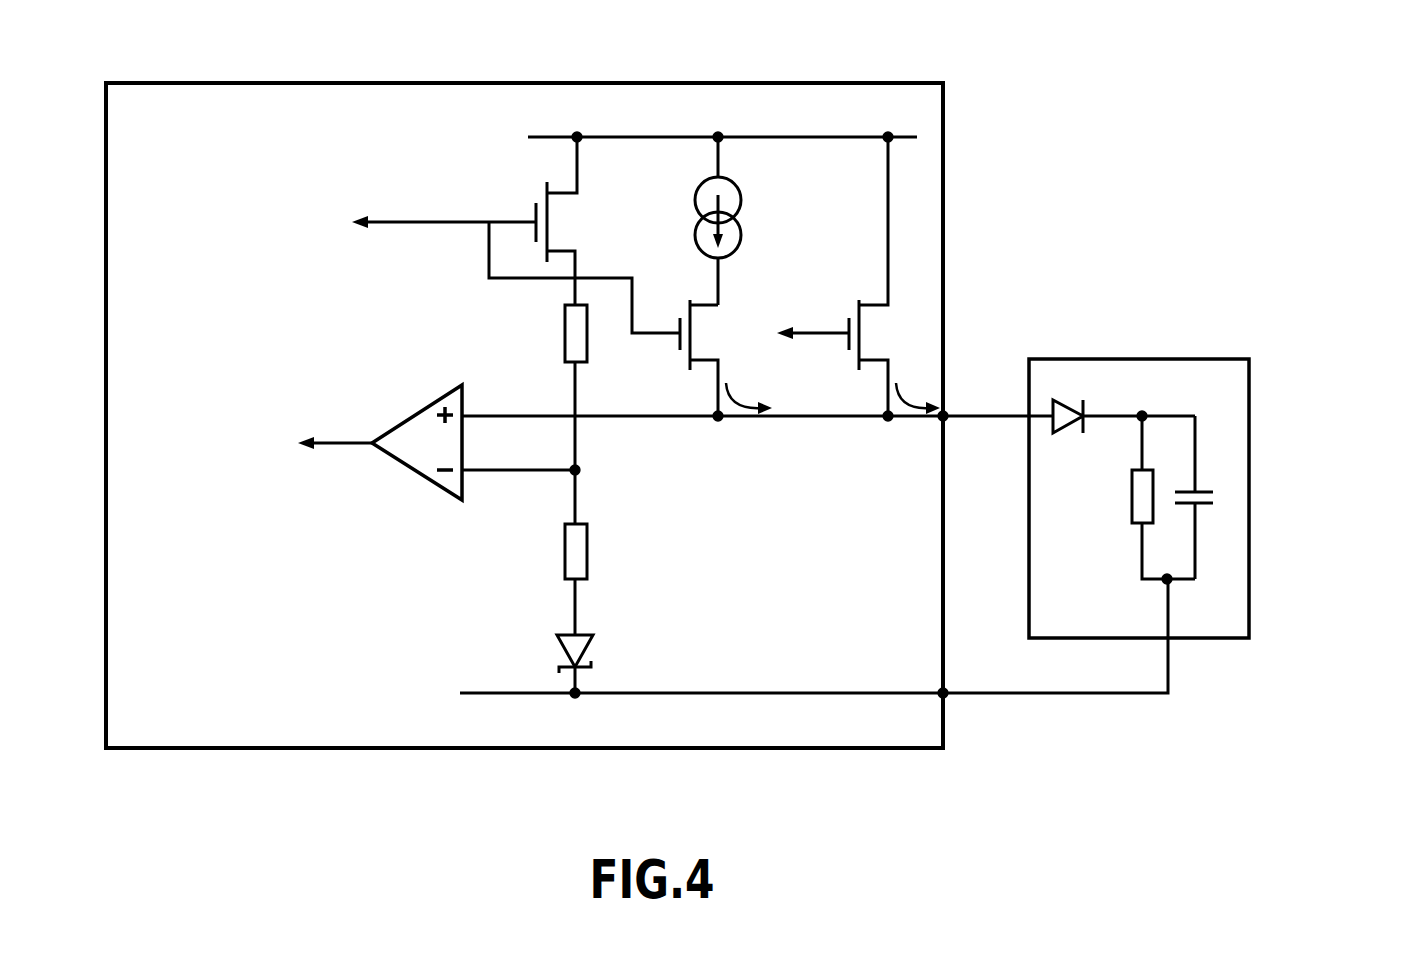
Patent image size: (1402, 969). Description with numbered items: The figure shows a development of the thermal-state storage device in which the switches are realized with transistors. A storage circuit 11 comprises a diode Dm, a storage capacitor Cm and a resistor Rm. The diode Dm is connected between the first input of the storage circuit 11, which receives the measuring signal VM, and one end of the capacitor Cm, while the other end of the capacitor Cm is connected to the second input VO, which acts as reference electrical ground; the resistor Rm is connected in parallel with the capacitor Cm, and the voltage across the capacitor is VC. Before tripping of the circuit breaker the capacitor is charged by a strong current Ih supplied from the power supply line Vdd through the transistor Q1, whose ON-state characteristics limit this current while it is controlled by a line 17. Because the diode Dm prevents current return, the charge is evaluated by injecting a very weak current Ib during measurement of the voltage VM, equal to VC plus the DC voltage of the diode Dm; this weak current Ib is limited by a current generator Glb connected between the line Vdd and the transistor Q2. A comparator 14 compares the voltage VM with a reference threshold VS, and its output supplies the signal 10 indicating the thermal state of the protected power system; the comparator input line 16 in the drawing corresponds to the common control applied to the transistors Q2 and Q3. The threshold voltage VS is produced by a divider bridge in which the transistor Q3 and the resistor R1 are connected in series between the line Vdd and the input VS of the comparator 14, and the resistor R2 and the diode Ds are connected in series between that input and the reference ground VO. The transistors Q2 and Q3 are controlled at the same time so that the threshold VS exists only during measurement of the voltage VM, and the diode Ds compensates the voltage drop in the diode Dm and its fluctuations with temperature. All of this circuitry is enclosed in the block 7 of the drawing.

The drive circuit 7 is at (948, 170).
The first control input 16 is at (405, 221).
The control line 17 is at (812, 333).
The comparator 14 is at (395, 425).
The output signal 10 is at (337, 445).
The storage circuit 11 is at (1199, 414).
The power supply line Vdd is at (782, 137).
The transistor Q3 is at (541, 185).
The transistor Q2 is at (688, 368).
The transistor Q1 is at (858, 302).
The current generator Glb is at (745, 231).
The resistor R1 is at (562, 338).
The resistor R2 is at (590, 553).
The diode Ds is at (590, 647).
The weak current Ib is at (749, 388).
The strong current Ih is at (918, 388).
The measuring signal VM is at (980, 412).
The reference threshold voltage VS is at (512, 476).
The second input / reference electrical ground VO is at (1125, 695).
The diode Dm is at (1063, 430).
The resistor Rm is at (1135, 522).
The storage capacitor Cm is at (1213, 490).
The capacitor voltage VC is at (1185, 415).